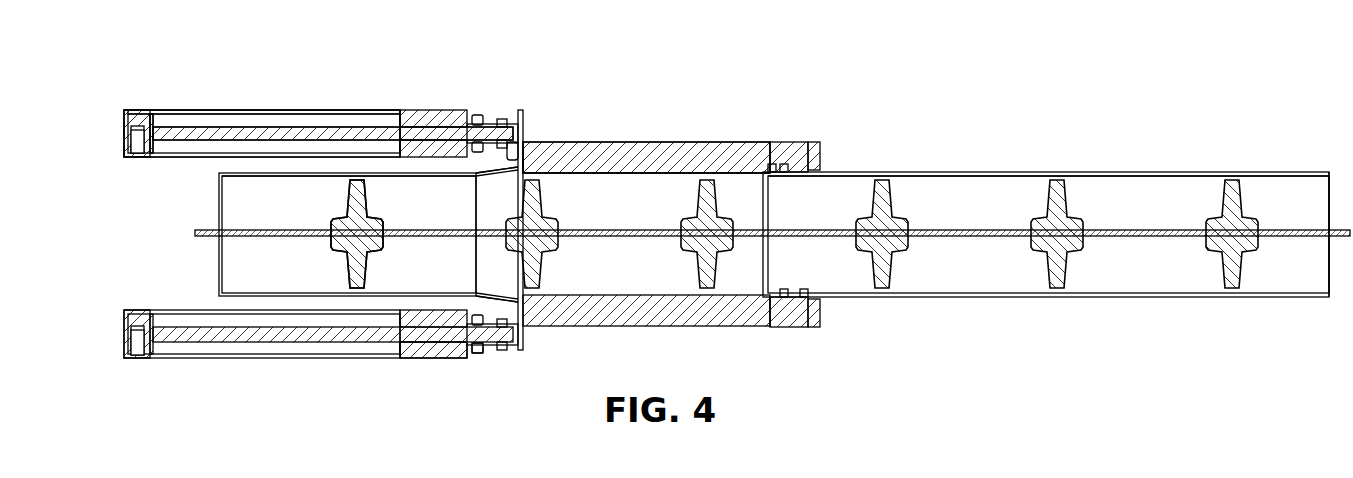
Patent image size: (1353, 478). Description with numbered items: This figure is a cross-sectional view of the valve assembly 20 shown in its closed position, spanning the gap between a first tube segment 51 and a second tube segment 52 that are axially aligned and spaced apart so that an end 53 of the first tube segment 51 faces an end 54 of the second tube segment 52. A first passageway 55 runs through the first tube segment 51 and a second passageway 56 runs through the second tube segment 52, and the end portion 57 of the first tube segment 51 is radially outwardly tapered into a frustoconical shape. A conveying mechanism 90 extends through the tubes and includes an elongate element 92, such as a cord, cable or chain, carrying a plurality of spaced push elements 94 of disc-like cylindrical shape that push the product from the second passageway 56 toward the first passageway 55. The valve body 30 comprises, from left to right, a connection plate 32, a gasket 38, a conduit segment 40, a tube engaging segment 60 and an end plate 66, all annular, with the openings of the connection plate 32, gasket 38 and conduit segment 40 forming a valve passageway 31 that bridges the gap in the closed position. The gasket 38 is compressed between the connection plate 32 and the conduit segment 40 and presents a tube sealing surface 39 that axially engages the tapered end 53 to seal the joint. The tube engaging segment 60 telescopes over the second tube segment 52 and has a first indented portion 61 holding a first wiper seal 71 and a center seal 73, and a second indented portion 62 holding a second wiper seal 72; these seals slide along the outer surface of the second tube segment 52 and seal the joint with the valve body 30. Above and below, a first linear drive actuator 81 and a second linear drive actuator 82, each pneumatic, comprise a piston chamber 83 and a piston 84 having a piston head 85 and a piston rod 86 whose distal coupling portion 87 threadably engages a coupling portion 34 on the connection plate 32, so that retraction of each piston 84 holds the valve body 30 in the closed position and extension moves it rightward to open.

The valve assembly 20 is at (858, 142).
The valve body 30 is at (670, 136).
The valve passageway 31 is at (636, 175).
The connection plate 32 is at (510, 350).
The coupling portion 34 is at (520, 130).
The gasket 38 is at (525, 165).
The tube sealing surface 39 is at (520, 172).
The conduit segment 40 is at (630, 142).
The first tube segment 51 is at (230, 215).
The second tube segment 52 is at (1290, 172).
The end of first tube segment 53 is at (522, 300).
The end of second tube segment 54 is at (764, 297).
The first passageway 55 is at (300, 176).
The second passageway 56 is at (987, 176).
The end portion 57 is at (480, 320).
The tube engaging segment 60 is at (788, 142).
The first indented portion 61 is at (782, 173).
The second indented portion 62 is at (804, 295).
The end plate 66 is at (815, 310).
The first wiper seal 71 is at (768, 167).
The second wiper seal 72 is at (784, 300).
The center seal 73 is at (815, 158).
The first linear drive actuator 81 is at (145, 100).
The second linear drive actuator 82 is at (145, 365).
The piston chamber 83 is at (362, 110).
The piston 84 is at (290, 128).
The piston head 85 is at (152, 110).
The piston rod 86 is at (218, 133).
The coupling portion 87 is at (523, 140).
The conveying mechanism 90 is at (388, 241).
The elongate element 92 is at (298, 237).
The push element 94 is at (333, 247).